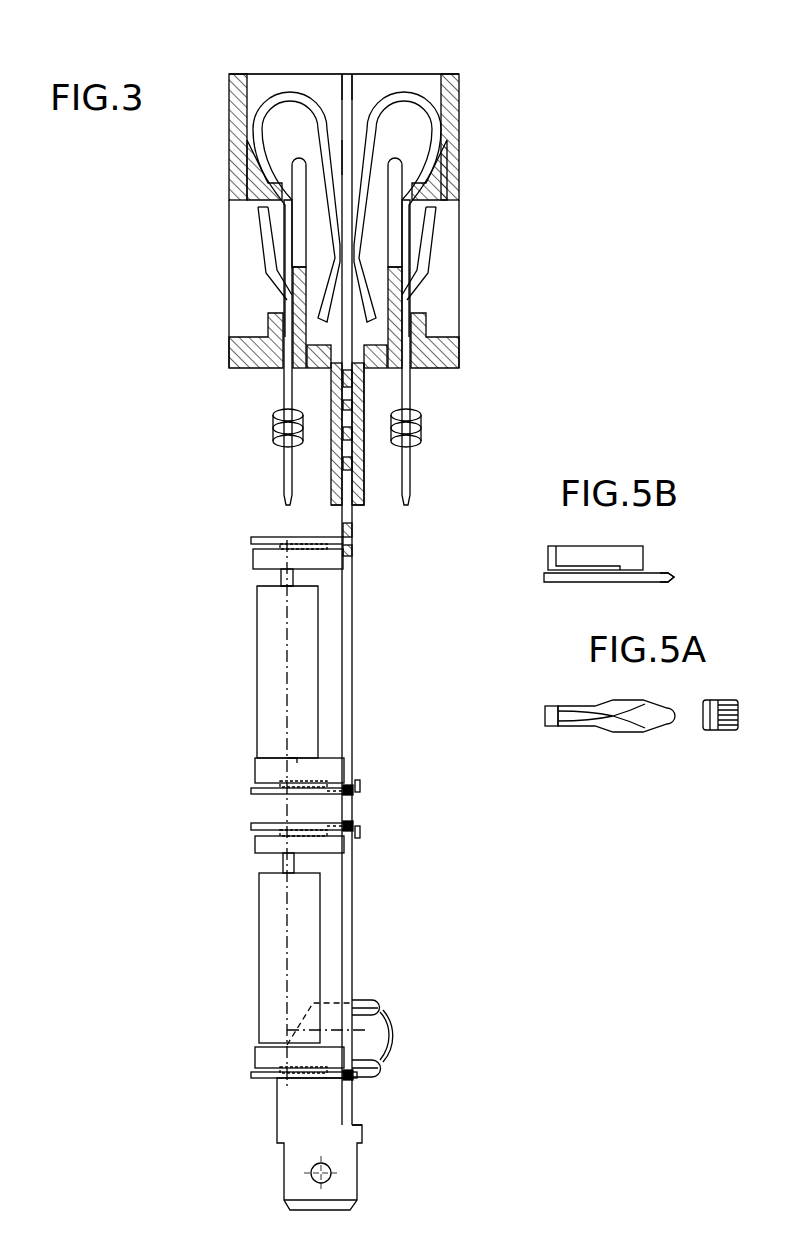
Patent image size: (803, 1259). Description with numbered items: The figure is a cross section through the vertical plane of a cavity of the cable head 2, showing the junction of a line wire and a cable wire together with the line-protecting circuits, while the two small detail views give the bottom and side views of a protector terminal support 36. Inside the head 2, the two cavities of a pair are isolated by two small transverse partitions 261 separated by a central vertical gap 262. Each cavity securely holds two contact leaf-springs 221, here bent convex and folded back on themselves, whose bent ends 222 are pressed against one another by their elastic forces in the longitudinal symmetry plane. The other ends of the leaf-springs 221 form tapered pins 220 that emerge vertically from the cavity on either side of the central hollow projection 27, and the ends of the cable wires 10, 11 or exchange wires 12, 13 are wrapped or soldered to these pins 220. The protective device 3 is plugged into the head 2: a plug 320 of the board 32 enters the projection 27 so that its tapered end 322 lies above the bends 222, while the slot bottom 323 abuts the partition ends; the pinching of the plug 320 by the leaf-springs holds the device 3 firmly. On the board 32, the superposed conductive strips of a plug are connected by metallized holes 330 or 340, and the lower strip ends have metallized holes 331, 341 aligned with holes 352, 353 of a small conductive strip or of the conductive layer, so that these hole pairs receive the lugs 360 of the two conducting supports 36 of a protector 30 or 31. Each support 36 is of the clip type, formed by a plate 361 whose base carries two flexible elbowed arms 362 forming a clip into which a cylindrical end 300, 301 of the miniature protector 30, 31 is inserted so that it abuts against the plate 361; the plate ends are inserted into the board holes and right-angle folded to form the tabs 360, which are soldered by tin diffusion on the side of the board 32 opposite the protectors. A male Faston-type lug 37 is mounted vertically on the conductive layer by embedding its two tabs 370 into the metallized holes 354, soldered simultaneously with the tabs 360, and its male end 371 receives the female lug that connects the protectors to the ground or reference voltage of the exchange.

In FIG. 3, the cable head 2 is at (484, 212).
In FIG. 3, the protective device 3 is at (392, 720).
In FIG. 3, the cable wire 10 is at (243, 428).
In FIG. 3, the cable wire 11 is at (280, 410).
In FIG. 3, the exchange wire 12 is at (452, 428).
In FIG. 3, the exchange wire 13 is at (417, 410).
In FIG. 3, the hollow projection 27 is at (364, 484).
In FIG. 3, the protector 30 is at (257, 668).
In FIG. 3, the protector 31 is at (265, 923).
In FIG. 3, the board 32 is at (353, 516).
In FIG. 3, the conducting support 36 is at (273, 800).
In FIG. 5B, the conducting support 36 is at (631, 566).
In FIG. 5A, the conducting support 36 is at (615, 731).
In FIG. 3, the lug 37 is at (280, 1098).
In FIG. 3, the tapered pin 220 is at (288, 470).
In FIG. 3, the contact leaf-spring 221 is at (287, 93).
In FIG. 3, the bent end 222 is at (333, 278).
In FIG. 3, the small transverse partition 261 is at (298, 74).
In FIG. 3, the central vertical gap 262 is at (346, 74).
In FIG. 3, the cylindrical end 300 is at (280, 590).
In FIG. 3, the cylindrical end 301 is at (292, 762).
In FIG. 3, the plug 320 is at (342, 85).
In FIG. 3, the plug end 322 is at (342, 165).
In FIG. 3, the slot bottom 323 is at (337, 510).
In FIG. 3, the metallized hole 330 is at (352, 384).
In FIG. 3, the metallized hole 331 is at (355, 533).
In FIG. 3, the metallized hole 340 is at (352, 447).
In FIG. 3, the metallized hole 341 is at (356, 824).
In FIG. 3, the metallized hole 352 is at (358, 792).
In FIG. 3, the metallized hole 353 is at (358, 1076).
In FIG. 3, the metallized hole 354 is at (353, 1000).
In FIG. 3, the lug 360 is at (358, 548).
In FIG. 5B, the lug 360 is at (670, 577).
In FIG. 5A, the lug 360 is at (672, 717).
In FIG. 3, the plate 361 is at (255, 540).
In FIG. 5B, the plate 361 is at (595, 582).
In FIG. 5A, the plate 361 is at (600, 706).
In FIG. 3, the flexible elbowed arm 362 is at (260, 577).
In FIG. 5B, the flexible elbowed arm 362 is at (588, 552).
In FIG. 5A, the flexible elbowed arm 362 is at (545, 718).
In FIG. 3, the tab 370 is at (383, 1000).
In FIG. 3, the male end 371 is at (305, 1173).